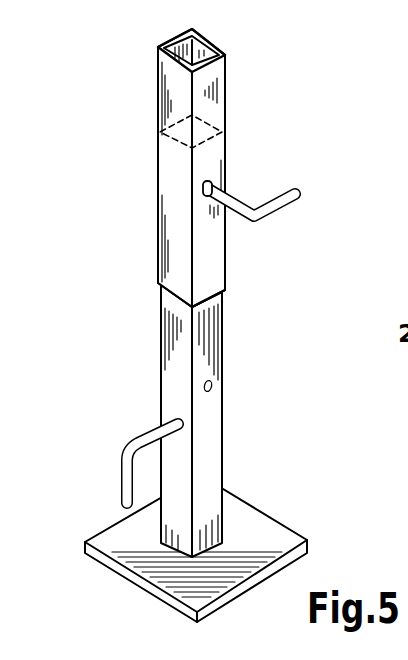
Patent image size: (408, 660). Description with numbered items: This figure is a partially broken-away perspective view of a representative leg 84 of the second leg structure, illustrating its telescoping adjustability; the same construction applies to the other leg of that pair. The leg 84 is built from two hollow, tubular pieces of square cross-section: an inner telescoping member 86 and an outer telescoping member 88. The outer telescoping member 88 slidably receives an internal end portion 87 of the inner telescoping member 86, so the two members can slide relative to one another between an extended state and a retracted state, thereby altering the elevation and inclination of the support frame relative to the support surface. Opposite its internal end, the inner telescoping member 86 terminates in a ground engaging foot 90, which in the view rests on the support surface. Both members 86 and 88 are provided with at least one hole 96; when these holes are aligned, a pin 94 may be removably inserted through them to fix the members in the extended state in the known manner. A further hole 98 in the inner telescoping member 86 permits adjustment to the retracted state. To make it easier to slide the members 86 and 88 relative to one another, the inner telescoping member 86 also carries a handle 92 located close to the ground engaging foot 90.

The leg 84 is at (210, 325).
The inner telescoping member 86 is at (225, 421).
The internal end portion 87 is at (228, 168).
The outer telescoping member 88 is at (212, 82).
The ground engaging foot 90 is at (130, 547).
The handle 92 is at (140, 439).
The pin 94 is at (214, 211).
The hole 96 is at (203, 186).
The hole 98 is at (213, 389).